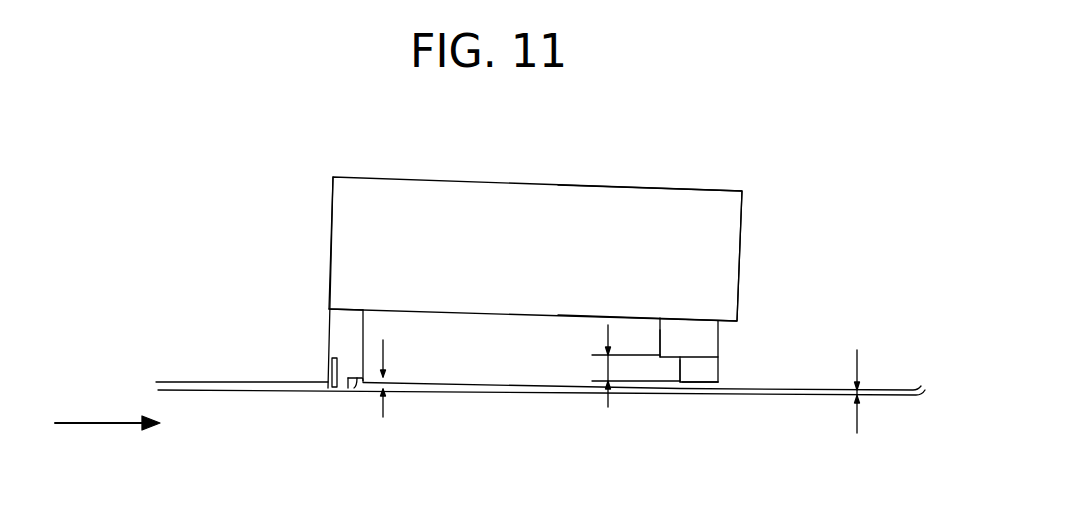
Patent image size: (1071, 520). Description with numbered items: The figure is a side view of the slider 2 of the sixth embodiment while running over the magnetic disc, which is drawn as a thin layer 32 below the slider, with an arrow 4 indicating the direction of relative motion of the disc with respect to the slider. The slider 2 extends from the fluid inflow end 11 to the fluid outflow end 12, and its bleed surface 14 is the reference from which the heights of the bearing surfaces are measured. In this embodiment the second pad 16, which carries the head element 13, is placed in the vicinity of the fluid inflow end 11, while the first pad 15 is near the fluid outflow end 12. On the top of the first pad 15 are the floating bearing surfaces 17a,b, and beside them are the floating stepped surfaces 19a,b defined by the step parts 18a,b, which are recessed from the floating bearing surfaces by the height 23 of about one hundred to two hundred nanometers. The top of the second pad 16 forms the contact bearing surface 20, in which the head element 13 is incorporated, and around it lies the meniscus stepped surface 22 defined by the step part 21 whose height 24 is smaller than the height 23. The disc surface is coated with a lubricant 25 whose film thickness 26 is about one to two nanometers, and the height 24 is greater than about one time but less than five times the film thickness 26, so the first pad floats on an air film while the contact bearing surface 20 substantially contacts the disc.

The slider 2 is at (443, 202).
The bleed surface 14 is at (558, 316).
The fluid inflow end 11 is at (328, 308).
The second pad 16 is at (343, 332).
The head element 13 is at (323, 381).
The lubricant 25 is at (227, 382).
The sheet 32 is at (238, 415).
The conveying direction 4 is at (98, 423).
The contact bearing surface 20 is at (340, 389).
The meniscus stepped surface 22 is at (352, 389).
The step part 21 is at (360, 389).
The height of the step part 24 is at (383, 405).
The height of the step parts 23 is at (608, 405).
The fluid outflow end 12 is at (737, 321).
The first pad 15 is at (700, 345).
The step parts 18a,b is at (680, 370).
The floating stepped surfaces 19a,b is at (672, 358).
The floating bearing surfaces 17a,b is at (697, 382).
The film thickness of the lubricant 26 is at (857, 420).